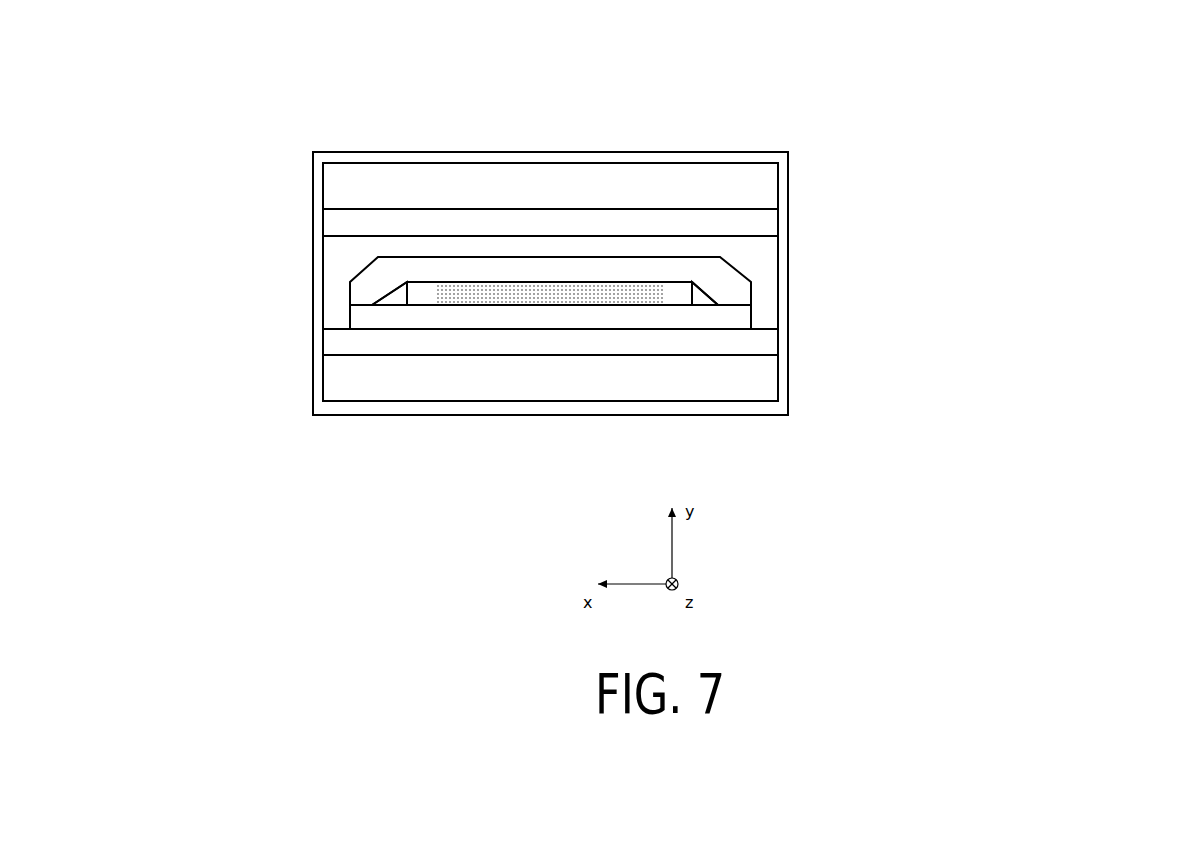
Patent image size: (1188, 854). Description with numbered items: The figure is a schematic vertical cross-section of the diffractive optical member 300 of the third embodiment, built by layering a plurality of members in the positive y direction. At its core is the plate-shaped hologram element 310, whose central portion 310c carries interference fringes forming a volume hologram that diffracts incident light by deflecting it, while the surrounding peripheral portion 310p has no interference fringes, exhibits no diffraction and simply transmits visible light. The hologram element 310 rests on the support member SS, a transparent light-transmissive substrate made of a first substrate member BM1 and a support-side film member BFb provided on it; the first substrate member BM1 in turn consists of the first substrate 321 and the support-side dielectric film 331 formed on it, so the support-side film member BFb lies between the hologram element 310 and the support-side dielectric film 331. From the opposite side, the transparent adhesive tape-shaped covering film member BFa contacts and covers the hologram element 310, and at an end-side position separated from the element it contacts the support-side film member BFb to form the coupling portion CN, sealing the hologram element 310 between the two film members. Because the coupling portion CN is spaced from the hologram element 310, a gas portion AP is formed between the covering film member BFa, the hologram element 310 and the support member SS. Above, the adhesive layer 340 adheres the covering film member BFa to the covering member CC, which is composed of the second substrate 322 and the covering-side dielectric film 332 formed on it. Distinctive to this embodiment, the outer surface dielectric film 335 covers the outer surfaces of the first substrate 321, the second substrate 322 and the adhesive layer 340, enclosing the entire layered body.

The diffractive optical member 300 is at (643, 92).
The hologram element 310 is at (592, 282).
The peripheral portion 310p is at (420, 297).
The central portion 310c is at (527, 303).
The second substrate 322 is at (758, 177).
The covering-side dielectric film 332 is at (758, 221).
The support-side dielectric film 331 is at (750, 342).
The first substrate 321 is at (765, 377).
The outer surface dielectric film 335 is at (318, 192).
The adhesive layer 340 is at (343, 273).
The coupling portion CN is at (738, 306).
The gas portion AP is at (703, 303).
The covering film member BFa is at (718, 275).
The support-side film member BFb is at (723, 322).
The covering member CC is at (1028, 143).
The first substrate member BM1 is at (1013, 350).
The support member SS is at (1087, 300).